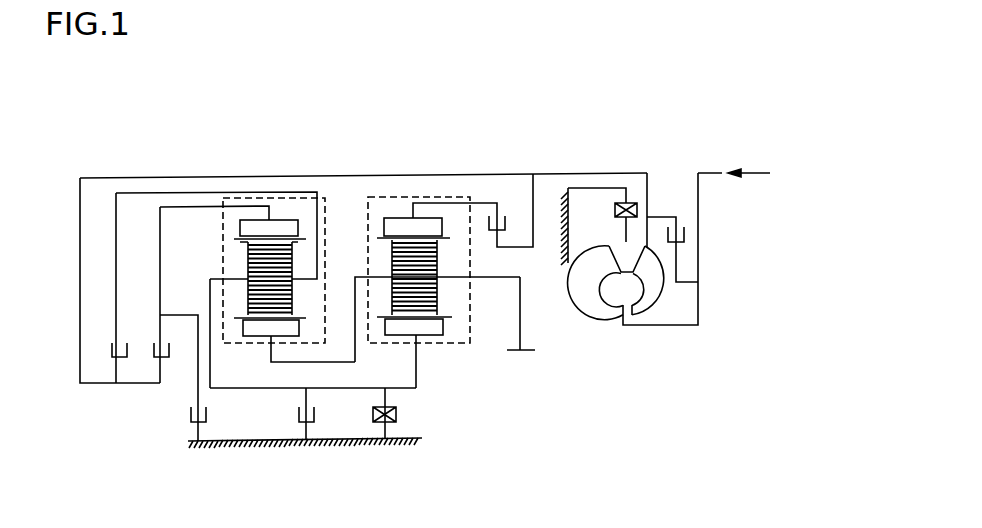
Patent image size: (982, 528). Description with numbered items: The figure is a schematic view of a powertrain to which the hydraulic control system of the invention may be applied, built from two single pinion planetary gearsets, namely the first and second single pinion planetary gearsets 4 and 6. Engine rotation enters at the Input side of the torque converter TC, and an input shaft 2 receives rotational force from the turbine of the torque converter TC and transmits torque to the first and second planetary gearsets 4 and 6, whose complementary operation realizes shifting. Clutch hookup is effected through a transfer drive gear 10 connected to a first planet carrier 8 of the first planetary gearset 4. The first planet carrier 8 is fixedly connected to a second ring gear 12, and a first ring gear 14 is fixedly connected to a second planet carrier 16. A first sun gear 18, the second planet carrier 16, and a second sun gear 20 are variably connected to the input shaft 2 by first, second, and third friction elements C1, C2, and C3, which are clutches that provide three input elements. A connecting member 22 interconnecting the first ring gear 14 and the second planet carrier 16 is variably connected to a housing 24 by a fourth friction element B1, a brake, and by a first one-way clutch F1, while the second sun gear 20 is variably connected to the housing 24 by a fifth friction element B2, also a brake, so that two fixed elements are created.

The input shaft 2 is at (557, 173).
The first single pinion planetary gearset 4 is at (400, 197).
The second single pinion planetary gearset 6 is at (258, 198).
The first planet carrier 8 is at (360, 277).
The transfer drive gear 10 is at (530, 346).
The second ring gear 12 is at (257, 332).
The first ring gear 14 is at (400, 330).
The second planet carrier 16 is at (308, 281).
The first sun gear 18 is at (384, 226).
The second sun gear 20 is at (240, 226).
The connecting member 22 is at (267, 388).
The housing 24 is at (223, 448).
The first friction element C1 is at (509, 222).
The second friction element C2 is at (131, 350).
The third friction element C3 is at (174, 350).
The fourth friction element B1 is at (318, 417).
The fifth friction element B2 is at (210, 417).
The first one-way clutch F1 is at (396, 416).
The torque converter TC is at (662, 343).
The input from engine Input is at (759, 172).